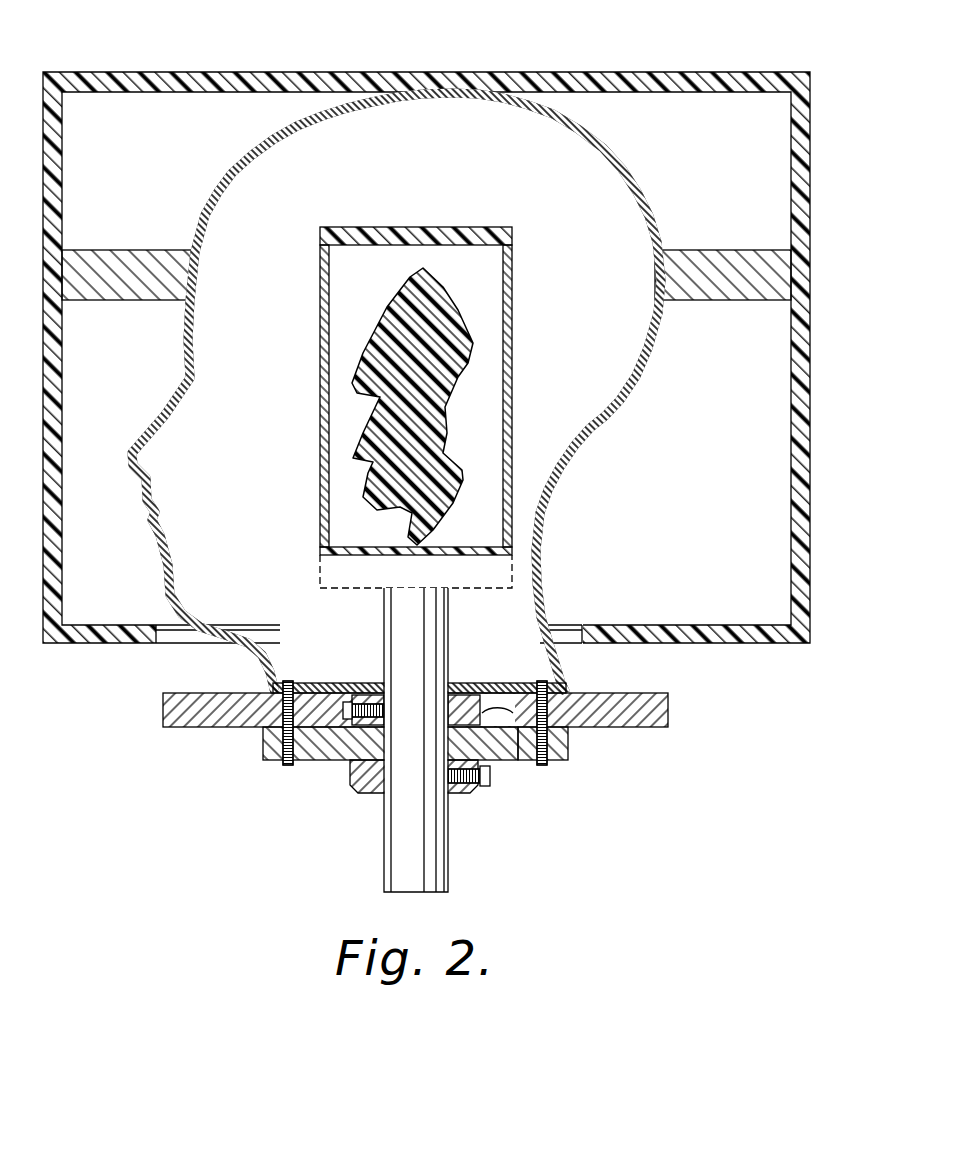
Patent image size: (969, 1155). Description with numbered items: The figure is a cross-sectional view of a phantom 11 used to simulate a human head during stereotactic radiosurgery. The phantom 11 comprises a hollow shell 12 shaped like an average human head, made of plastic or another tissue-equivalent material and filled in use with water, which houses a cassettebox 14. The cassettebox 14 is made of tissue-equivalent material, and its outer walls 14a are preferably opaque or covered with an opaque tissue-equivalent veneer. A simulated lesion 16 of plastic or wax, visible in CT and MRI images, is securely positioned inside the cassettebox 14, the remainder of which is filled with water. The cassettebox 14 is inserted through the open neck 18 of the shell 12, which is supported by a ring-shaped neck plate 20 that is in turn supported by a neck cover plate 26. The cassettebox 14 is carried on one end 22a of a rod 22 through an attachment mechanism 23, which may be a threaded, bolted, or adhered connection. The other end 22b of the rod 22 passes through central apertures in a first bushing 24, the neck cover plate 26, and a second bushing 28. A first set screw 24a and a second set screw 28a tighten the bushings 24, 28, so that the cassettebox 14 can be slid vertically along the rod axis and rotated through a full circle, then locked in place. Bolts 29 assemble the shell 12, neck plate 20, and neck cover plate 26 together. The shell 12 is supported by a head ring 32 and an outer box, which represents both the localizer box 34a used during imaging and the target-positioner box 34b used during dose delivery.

The phantom 11 is at (424, 359).
The hollow shell 12 is at (655, 210).
The cassettebox 14 is at (457, 391).
The outer walls 14a is at (513, 388).
The simulated lesion 16 is at (445, 461).
The neck 18 is at (272, 676).
The neck plate 20 is at (196, 727).
The rod 22 is at (450, 632).
The rod end 22a is at (384, 590).
The other end of the rod 22b is at (450, 810).
The attachment mechanism 23 is at (320, 560).
The first bushing 24 is at (522, 760).
The first set screw 24a is at (345, 711).
The neck cover plate 26 is at (263, 738).
The second bushing 28 is at (372, 795).
The second set screw 28a is at (490, 782).
The bolt 29 is at (565, 760).
The head ring 32 is at (768, 250).
The localizer box 34a is at (218, 634).
The target-positioner box 34b is at (742, 645).